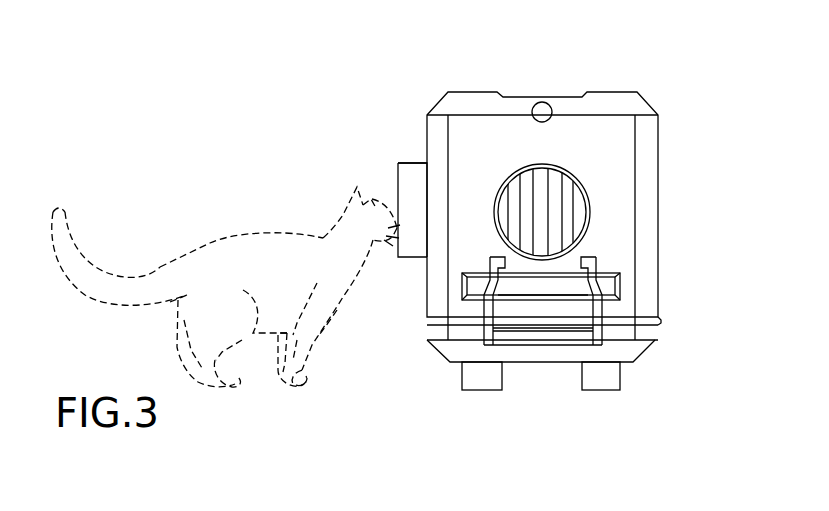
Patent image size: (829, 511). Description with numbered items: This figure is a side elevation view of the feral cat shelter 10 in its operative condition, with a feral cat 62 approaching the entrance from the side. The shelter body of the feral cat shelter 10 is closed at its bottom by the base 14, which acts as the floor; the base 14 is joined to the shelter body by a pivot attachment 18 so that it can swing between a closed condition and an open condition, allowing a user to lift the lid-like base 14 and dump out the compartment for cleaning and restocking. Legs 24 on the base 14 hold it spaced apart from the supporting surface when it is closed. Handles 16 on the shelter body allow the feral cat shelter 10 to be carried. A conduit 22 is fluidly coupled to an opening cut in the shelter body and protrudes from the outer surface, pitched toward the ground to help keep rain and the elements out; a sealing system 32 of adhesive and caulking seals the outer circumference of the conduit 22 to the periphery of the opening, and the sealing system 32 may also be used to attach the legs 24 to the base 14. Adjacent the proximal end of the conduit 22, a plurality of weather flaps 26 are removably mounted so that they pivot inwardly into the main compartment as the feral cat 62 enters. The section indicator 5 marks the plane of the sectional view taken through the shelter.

The feral cat shelter 10 is at (602, 44).
The base 14 is at (645, 348).
The handles 16 is at (568, 345).
The pivot attachment 18 is at (660, 322).
The conduit 22 is at (398, 172).
The legs 24 is at (481, 390).
The weather flaps 26 is at (548, 185).
The sealing system 32 is at (427, 160).
The section line 5- 5 is at (541, 92).
The feral cat 62 is at (207, 243).